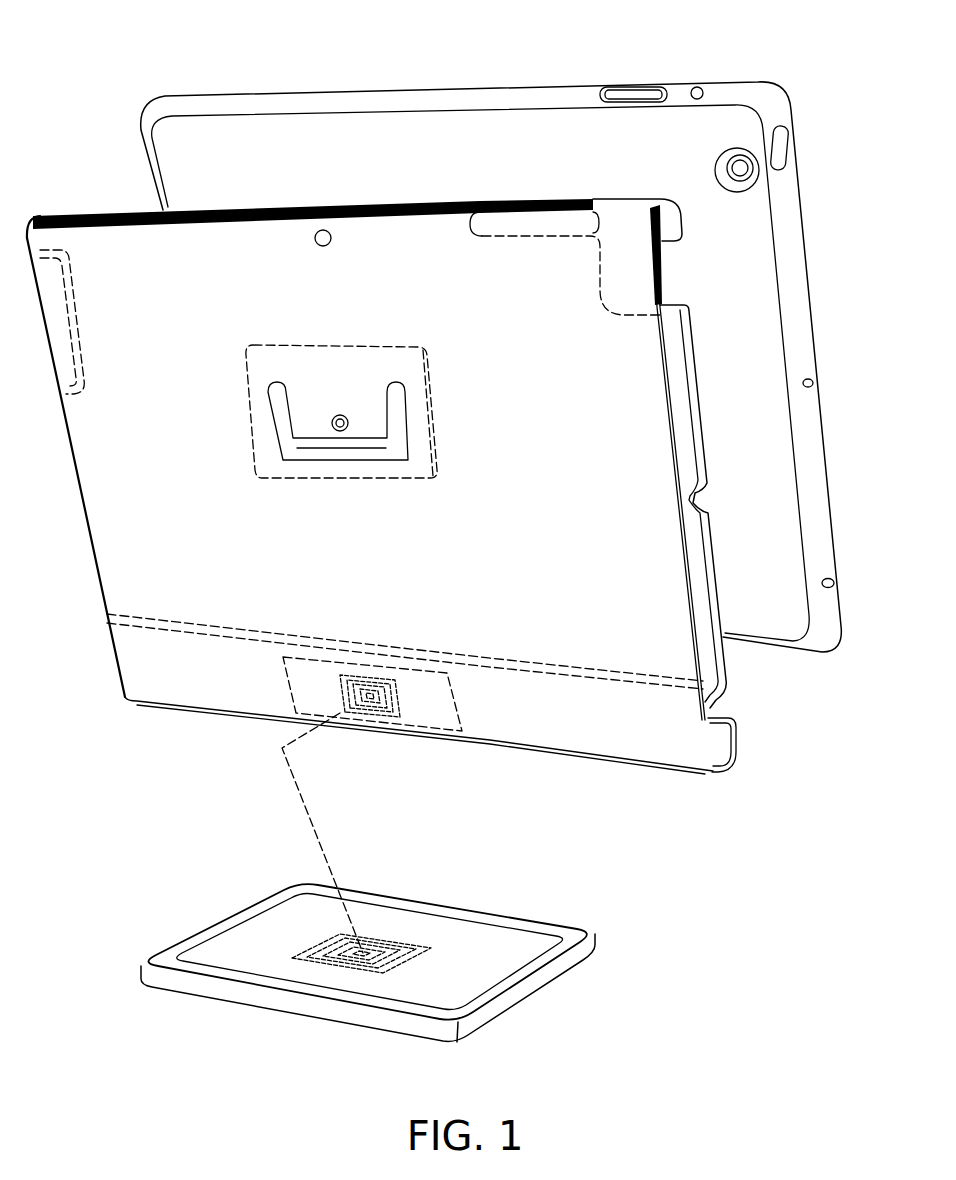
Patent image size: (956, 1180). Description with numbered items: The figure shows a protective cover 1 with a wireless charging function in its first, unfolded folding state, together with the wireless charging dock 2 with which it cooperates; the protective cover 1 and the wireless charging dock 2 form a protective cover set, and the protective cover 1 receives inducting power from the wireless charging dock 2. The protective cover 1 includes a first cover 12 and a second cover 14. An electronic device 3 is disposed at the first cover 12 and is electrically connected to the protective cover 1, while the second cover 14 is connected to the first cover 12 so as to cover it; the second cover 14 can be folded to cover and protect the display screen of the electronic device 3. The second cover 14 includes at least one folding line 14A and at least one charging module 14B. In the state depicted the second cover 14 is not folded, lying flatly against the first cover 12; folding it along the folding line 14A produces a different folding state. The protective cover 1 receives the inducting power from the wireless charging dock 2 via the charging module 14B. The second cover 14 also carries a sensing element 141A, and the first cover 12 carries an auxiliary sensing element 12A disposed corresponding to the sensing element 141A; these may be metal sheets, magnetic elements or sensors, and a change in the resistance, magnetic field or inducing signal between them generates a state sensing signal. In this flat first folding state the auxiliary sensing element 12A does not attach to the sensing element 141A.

The protective cover 1 is at (108, 245).
The wireless charging dock 2 is at (225, 903).
The electronic device 3 is at (266, 98).
The first cover 12 is at (713, 670).
The auxiliary sensing element 12A is at (342, 414).
The second cover 14 is at (656, 752).
The folding line 14A is at (205, 634).
The charging module 14B is at (467, 716).
The sensing element 141A is at (323, 229).